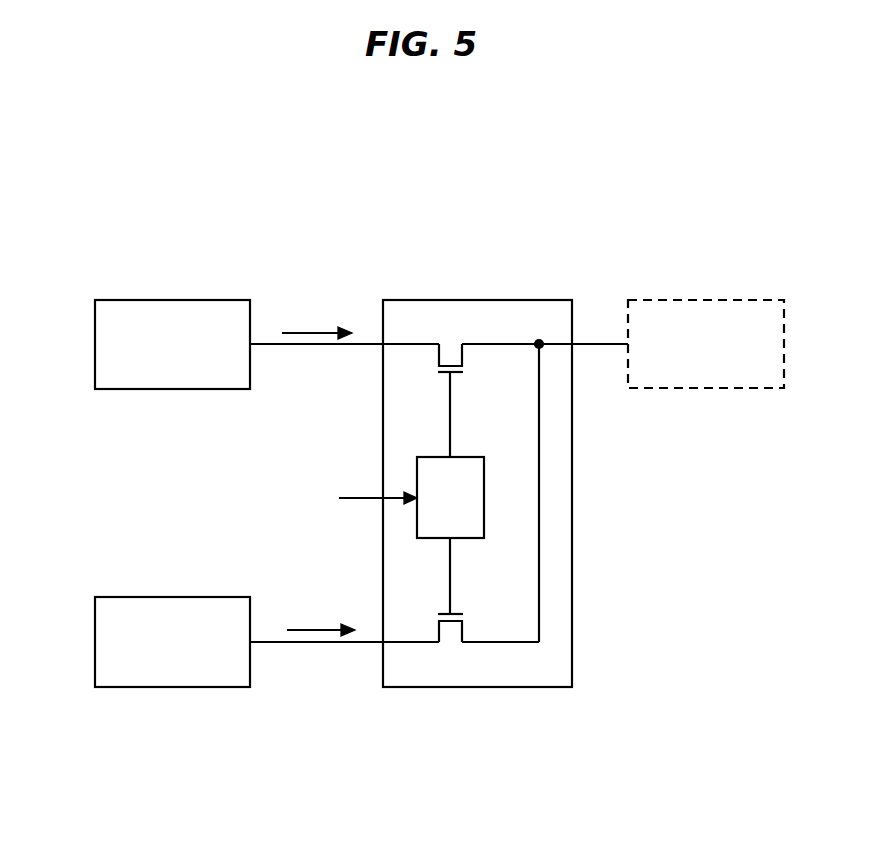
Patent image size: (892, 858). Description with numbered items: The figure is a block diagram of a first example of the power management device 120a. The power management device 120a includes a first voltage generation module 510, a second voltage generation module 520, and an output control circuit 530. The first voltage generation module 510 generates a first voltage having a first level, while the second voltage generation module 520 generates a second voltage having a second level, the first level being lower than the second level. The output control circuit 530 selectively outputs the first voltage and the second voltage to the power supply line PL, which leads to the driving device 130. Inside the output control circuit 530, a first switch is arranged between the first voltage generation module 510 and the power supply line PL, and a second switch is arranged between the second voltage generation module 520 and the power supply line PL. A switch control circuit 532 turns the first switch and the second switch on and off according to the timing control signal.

The power management device 120a is at (147, 195).
The first voltage generation module 510 is at (209, 300).
The second voltage generation module 520 is at (216, 688).
The output control circuit 530 is at (484, 300).
The switch control circuit 532 is at (417, 470).
The driving device 130 is at (686, 358).
The power supply line PL is at (600, 343).